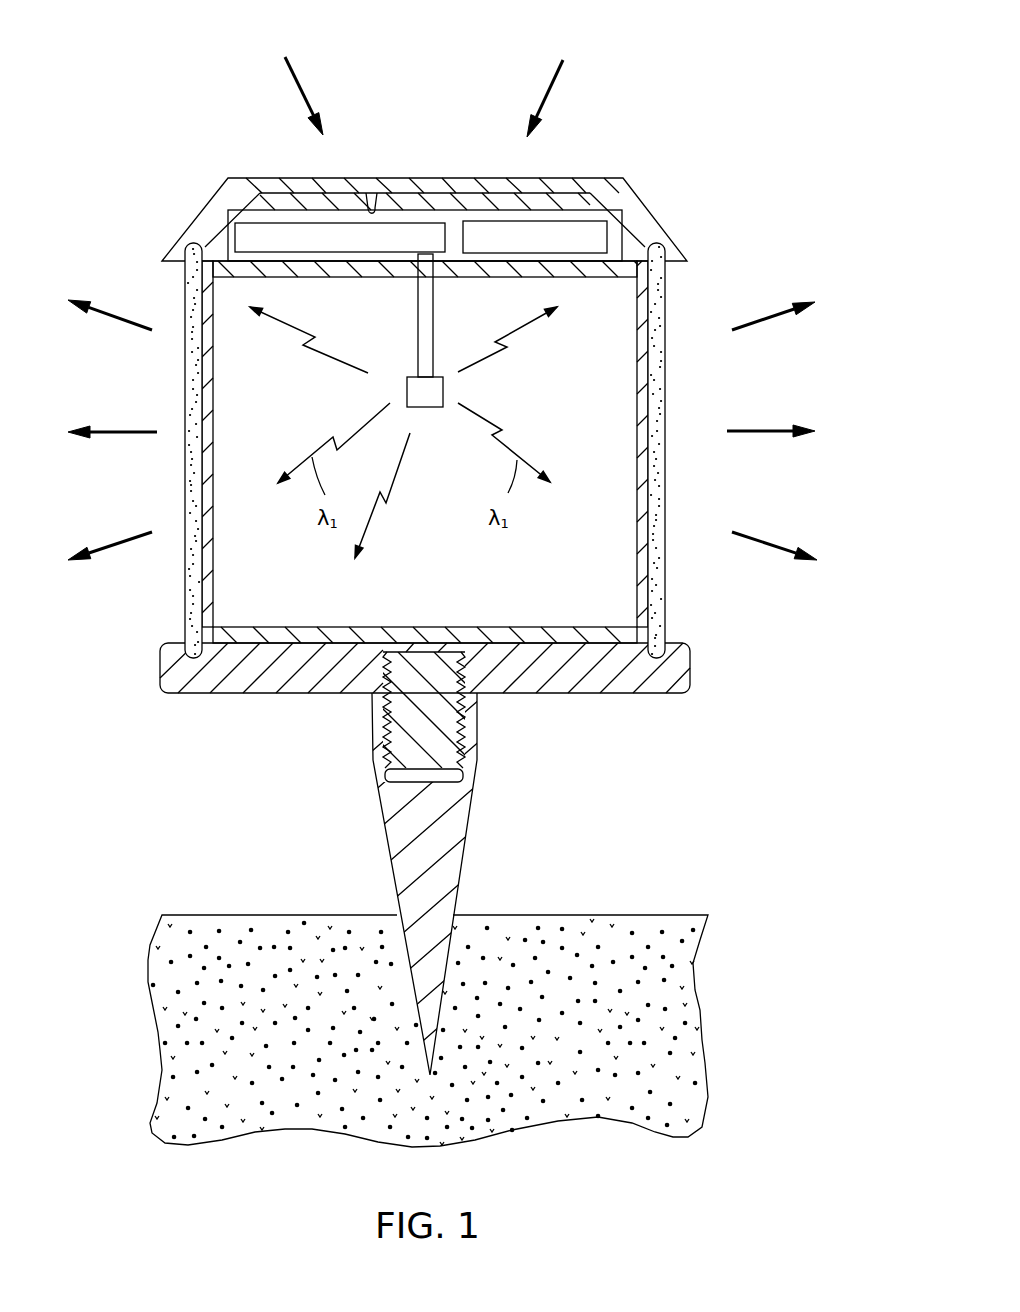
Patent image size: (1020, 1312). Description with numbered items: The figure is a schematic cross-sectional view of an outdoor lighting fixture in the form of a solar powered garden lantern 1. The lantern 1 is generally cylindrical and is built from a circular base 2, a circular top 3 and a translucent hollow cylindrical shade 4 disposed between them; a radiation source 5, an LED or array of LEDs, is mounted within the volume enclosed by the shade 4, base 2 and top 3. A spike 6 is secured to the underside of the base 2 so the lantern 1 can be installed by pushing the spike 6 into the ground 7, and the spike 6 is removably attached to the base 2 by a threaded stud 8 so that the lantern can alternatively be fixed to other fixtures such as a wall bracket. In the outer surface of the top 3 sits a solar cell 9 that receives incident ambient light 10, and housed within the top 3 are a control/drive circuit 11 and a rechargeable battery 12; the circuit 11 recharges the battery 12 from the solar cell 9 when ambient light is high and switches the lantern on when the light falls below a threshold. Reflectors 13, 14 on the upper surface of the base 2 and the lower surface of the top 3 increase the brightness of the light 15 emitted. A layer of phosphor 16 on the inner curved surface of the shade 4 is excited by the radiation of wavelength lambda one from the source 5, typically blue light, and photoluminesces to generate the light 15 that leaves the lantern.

The solar powered garden lantern 1 is at (745, 765).
The base 2 is at (262, 690).
The top 3 is at (638, 212).
The shade 4 is at (183, 293).
The radiation source 5 is at (445, 392).
The spike 6 is at (455, 862).
The ground 7 is at (700, 1040).
The threaded stud 8 is at (460, 718).
The solar cell 9 is at (562, 178).
The incident ambient light 10 is at (300, 83).
The control/drive circuit 11 is at (258, 238).
The rechargeable battery 12 is at (597, 241).
The reflector 13 is at (272, 628).
The reflector 14 is at (604, 278).
The light 15 is at (762, 428).
The phosphor 16 is at (203, 622).